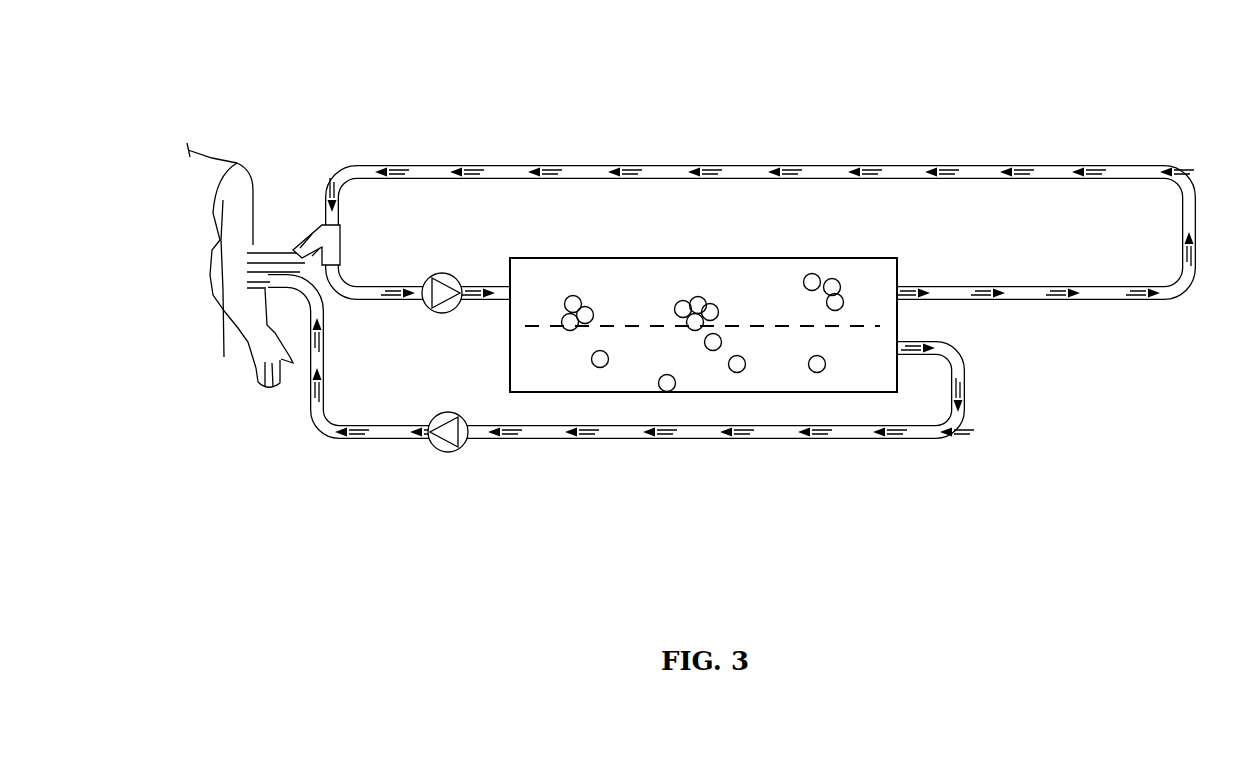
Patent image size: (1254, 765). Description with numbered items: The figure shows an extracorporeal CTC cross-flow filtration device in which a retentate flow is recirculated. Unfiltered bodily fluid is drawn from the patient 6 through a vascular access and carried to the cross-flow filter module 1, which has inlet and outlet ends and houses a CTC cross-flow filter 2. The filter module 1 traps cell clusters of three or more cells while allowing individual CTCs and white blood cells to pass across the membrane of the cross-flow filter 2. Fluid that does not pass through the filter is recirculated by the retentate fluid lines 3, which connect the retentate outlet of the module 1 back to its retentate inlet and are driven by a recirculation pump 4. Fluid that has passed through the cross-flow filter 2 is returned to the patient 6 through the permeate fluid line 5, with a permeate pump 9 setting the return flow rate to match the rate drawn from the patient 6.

The cross-flow filter module 1 is at (645, 258).
The CTC cross-flow filter 2 is at (767, 325).
The retentate fluid lines 3 is at (1195, 190).
The recirculation pump 4 is at (436, 272).
The permeate fluid line 5 is at (940, 440).
The patient 6 is at (237, 163).
The permeate pump 9 is at (450, 452).